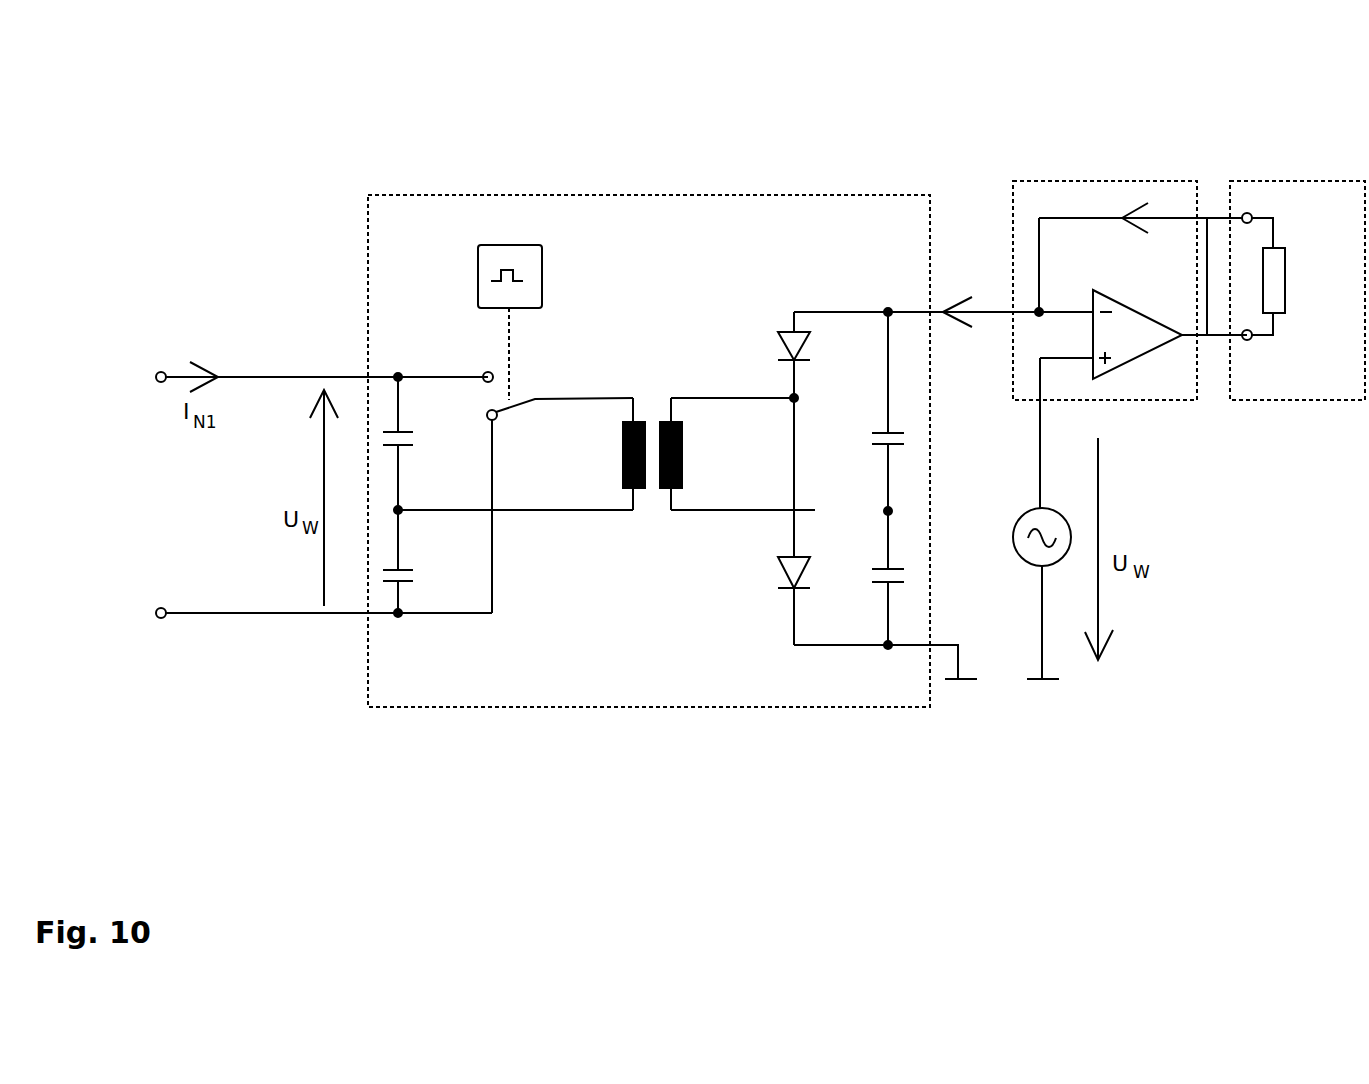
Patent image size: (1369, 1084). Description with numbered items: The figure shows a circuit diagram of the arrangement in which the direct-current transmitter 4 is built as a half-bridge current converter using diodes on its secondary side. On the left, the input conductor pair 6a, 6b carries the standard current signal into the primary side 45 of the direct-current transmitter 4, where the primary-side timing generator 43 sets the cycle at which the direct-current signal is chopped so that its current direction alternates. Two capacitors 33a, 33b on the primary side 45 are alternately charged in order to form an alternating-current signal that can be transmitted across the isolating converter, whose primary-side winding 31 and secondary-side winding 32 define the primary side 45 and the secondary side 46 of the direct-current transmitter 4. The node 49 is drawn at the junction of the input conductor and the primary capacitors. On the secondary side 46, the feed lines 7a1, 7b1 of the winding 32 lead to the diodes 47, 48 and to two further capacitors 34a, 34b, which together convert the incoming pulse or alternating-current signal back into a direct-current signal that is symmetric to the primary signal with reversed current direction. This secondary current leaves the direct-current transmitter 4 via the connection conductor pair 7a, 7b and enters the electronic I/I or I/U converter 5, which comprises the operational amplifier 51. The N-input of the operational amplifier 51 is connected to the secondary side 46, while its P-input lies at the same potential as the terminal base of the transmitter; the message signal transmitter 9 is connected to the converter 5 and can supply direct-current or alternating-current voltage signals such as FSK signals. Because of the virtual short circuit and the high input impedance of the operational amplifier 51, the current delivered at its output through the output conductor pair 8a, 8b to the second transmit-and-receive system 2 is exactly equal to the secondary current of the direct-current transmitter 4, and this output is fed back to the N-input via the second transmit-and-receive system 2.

The second transmit-and-receive system 2 is at (1293, 182).
The direct-current transmitter 4 is at (617, 173).
The electronic I/I or I/U converter 5 is at (1066, 150).
The conductor section 6a is at (297, 376).
The conductor section 6b is at (290, 615).
The connection conductor 7a is at (993, 307).
The connection conductor 7b is at (1037, 637).
The feed line 7a1 is at (723, 397).
The feed line 7b1 is at (750, 514).
The output conductor 8a is at (1213, 218).
The output conductor 8b is at (1209, 337).
The message signal transmitter 9 is at (1027, 567).
The primary-side winding 31 is at (625, 450).
The secondary-side winding 32 is at (683, 450).
The capacitor 33a is at (432, 441).
The capacitor 33b is at (432, 561).
The capacitor 34a is at (876, 428).
The capacitor 34b is at (895, 592).
The primary-side timing generator 43 is at (508, 245).
The primary side 45 is at (380, 505).
The secondary side 46 is at (920, 480).
The diode 47 is at (787, 597).
The diode 48 is at (783, 325).
The node 49 is at (465, 390).
The operational amplifier 51 is at (1122, 343).